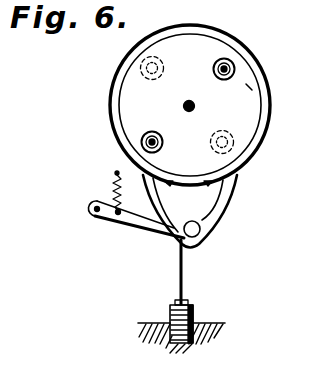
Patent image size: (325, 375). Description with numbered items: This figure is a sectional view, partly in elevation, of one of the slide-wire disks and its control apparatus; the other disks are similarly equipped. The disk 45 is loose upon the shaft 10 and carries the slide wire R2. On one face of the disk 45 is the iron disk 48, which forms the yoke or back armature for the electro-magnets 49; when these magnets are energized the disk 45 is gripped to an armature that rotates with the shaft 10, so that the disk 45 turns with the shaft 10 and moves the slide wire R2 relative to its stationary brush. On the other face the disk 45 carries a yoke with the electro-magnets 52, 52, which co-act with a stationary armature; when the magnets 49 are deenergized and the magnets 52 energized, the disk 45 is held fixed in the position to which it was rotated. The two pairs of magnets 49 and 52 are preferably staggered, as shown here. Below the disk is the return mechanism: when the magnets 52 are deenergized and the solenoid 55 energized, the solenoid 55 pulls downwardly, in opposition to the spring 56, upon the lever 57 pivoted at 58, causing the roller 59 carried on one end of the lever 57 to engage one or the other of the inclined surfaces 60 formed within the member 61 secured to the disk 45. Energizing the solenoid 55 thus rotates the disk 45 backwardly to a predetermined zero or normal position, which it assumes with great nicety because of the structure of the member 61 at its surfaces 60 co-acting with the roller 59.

The shaft 10 is at (197, 96).
The disk 45 is at (245, 157).
The iron disk 48 is at (248, 86).
The electro-magnets 49 is at (232, 63).
The electro-magnets 52 is at (160, 58).
The solenoid 55 is at (194, 311).
The spring 56 is at (115, 177).
The lever 57 is at (139, 224).
The pivot 58 is at (95, 214).
The roller 59 is at (200, 222).
The inclined surfaces 60 is at (222, 193).
The member 61 is at (210, 238).
The slide wire R2 is at (113, 80).